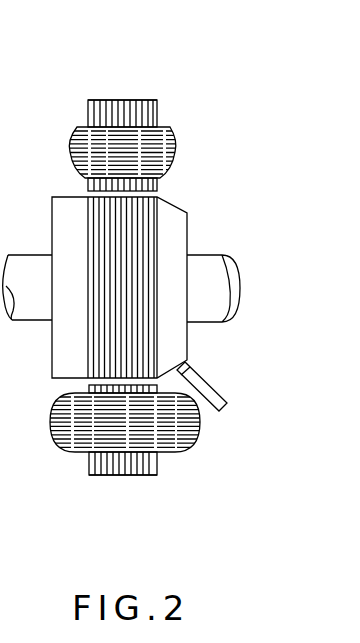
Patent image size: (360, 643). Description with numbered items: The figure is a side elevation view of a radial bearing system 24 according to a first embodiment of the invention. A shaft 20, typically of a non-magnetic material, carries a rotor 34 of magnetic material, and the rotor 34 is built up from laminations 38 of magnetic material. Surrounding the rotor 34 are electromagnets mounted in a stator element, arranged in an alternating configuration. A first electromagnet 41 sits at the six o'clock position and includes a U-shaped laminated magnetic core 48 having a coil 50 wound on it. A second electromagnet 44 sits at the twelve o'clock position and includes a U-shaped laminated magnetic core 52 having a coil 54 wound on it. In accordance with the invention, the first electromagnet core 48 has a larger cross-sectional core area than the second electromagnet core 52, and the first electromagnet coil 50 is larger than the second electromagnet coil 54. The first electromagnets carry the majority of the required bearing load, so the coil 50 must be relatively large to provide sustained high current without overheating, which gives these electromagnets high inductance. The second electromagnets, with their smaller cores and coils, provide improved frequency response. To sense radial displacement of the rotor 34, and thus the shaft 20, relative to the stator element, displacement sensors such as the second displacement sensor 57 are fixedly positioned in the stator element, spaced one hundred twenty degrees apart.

The shaft 20 is at (220, 307).
The radial bearing system 24 is at (197, 97).
The rotor 34 is at (180, 242).
The laminations 38 is at (92, 350).
The first electromagnet 41 is at (78, 467).
The second electromagnet 44 is at (133, 92).
The U-shaped laminated magnetic core 48 is at (147, 464).
The coil 50 is at (185, 447).
The U-shaped laminated magnetic core 52 is at (107, 110).
The coil 54 is at (75, 163).
The second displacement sensor 57 is at (212, 393).